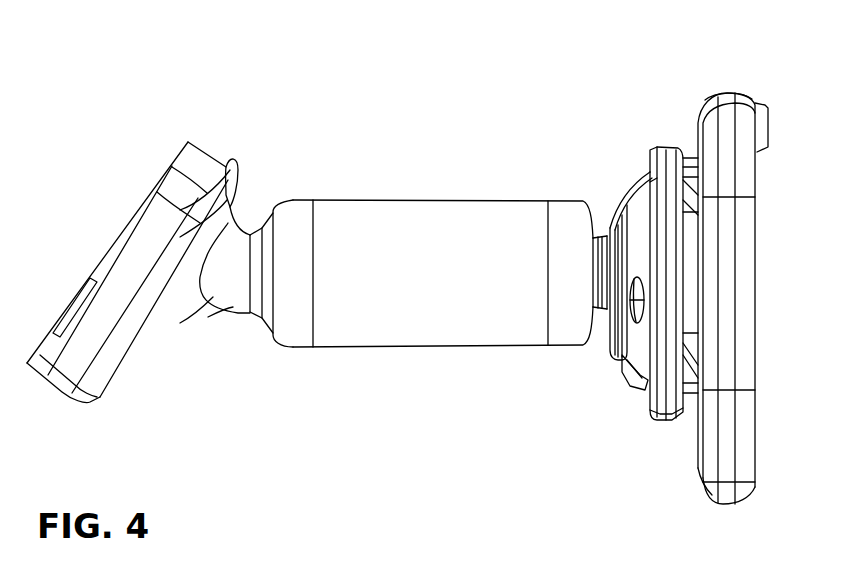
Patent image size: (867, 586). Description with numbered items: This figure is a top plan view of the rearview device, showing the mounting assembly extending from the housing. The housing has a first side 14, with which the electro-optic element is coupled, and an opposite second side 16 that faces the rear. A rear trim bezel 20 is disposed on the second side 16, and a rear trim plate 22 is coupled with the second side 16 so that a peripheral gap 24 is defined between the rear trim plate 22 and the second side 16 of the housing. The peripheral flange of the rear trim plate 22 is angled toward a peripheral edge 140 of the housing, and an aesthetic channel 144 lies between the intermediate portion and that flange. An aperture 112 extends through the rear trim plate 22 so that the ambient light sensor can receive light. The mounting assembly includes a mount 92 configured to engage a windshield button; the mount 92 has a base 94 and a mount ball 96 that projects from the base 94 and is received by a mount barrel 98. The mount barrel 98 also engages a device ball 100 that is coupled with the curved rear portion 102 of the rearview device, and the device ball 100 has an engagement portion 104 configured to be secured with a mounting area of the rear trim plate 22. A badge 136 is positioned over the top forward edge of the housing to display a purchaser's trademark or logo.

The first side 14 is at (757, 490).
The second side 16 is at (713, 503).
The rear trim bezel 20 is at (703, 477).
The rear trim plate 22 is at (622, 175).
The peripheral gap 24 is at (692, 160).
The mount 92 is at (198, 158).
The base 94 is at (52, 372).
The mount ball 96 is at (232, 333).
The mount barrel 98 is at (405, 213).
The device ball 100 is at (593, 318).
The rear portion 102 is at (615, 223).
The engagement portion 104 is at (612, 340).
The aperture 112 is at (640, 382).
The badge 136 is at (770, 123).
The peripheral edge 140 is at (727, 93).
The aesthetic channel 144 is at (634, 372).